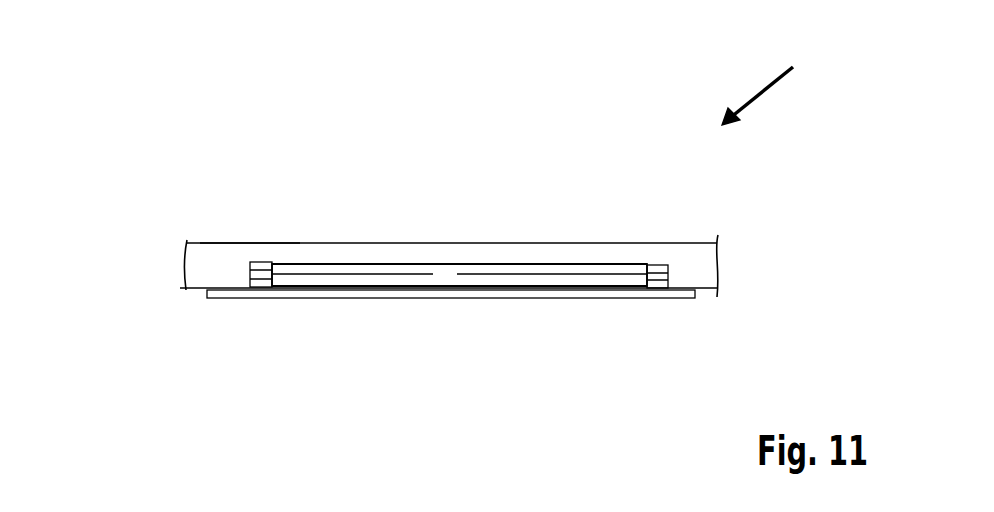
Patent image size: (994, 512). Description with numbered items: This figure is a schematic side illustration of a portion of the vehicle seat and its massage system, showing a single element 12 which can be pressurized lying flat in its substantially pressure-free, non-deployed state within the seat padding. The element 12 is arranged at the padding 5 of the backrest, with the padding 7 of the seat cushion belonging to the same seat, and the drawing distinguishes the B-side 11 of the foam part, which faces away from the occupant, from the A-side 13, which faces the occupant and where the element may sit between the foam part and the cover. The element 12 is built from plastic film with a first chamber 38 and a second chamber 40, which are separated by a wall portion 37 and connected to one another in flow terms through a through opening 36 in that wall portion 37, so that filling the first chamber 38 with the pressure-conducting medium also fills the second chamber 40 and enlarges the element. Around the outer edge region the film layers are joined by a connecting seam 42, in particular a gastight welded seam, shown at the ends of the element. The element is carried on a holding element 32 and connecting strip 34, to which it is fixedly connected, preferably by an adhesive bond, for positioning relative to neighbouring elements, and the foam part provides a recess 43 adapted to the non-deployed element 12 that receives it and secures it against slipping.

The padding 5 is at (250, 149).
The padding 7 is at (211, 250).
The B-side 11 is at (193, 283).
The element which can be pressurized 12 is at (781, 74).
The A-side 13 is at (199, 249).
The holding element 32 is at (433, 368).
The connecting strip 34 is at (225, 295).
The through opening 36 is at (447, 279).
The wall portion 37 is at (536, 280).
The first chamber 38 is at (377, 290).
The second chamber 40 is at (343, 274).
The connecting seam 42 is at (260, 262).
The recess 43 is at (670, 277).